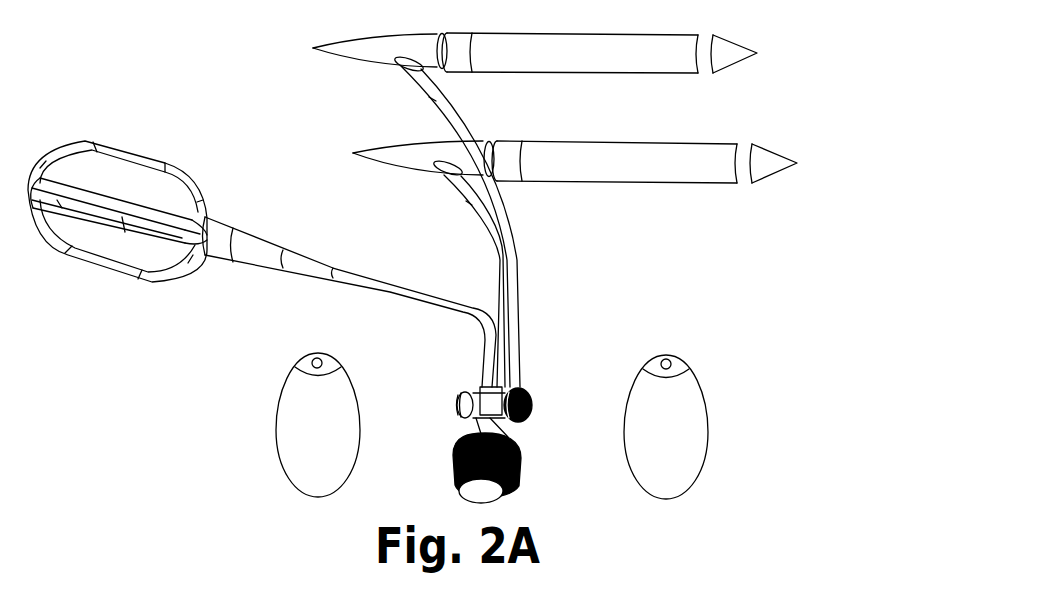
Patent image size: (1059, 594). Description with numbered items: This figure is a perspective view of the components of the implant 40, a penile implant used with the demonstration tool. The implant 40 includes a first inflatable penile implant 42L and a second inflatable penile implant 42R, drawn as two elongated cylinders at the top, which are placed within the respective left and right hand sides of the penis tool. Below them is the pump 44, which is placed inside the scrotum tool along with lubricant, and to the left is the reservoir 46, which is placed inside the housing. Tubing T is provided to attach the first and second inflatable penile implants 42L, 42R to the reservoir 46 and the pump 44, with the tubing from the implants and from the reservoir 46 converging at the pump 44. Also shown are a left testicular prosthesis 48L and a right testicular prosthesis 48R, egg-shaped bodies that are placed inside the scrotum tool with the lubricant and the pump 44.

The implant 40 is at (697, 280).
The second inflatable penile implant 42R is at (598, 52).
The first inflatable penile implant 42L is at (660, 166).
The pump 44 is at (525, 475).
The reservoir 46 is at (108, 238).
The right testicular prosthesis 48R is at (292, 430).
The left testicular prosthesis 48L is at (690, 422).
The tubing T is at (435, 298).